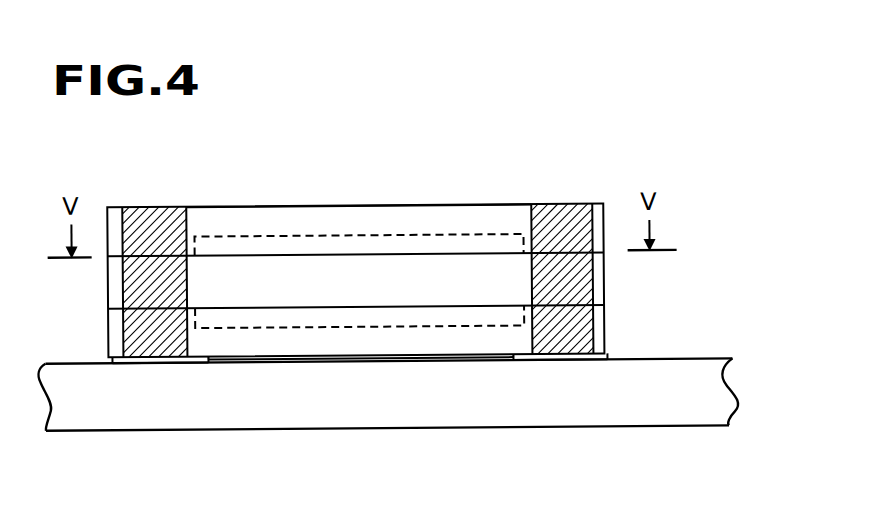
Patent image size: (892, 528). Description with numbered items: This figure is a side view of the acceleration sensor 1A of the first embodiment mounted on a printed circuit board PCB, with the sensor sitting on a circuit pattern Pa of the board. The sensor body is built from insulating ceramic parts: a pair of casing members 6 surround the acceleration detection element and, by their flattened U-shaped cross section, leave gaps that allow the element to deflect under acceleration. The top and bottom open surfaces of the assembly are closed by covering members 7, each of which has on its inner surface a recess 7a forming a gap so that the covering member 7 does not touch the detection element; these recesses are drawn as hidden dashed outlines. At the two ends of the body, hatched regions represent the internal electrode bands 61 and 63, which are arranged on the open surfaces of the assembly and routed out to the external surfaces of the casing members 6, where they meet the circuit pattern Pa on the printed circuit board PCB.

The acceleration sensor 1A is at (472, 190).
The casing member 6 is at (250, 280).
The covering member 7 is at (313, 213).
The recess 7a is at (383, 233).
The internal electrode band 61 is at (567, 203).
The internal electrode band 63 is at (147, 208).
The circuit pattern Pa is at (140, 363).
The printed circuit board PCB is at (690, 370).